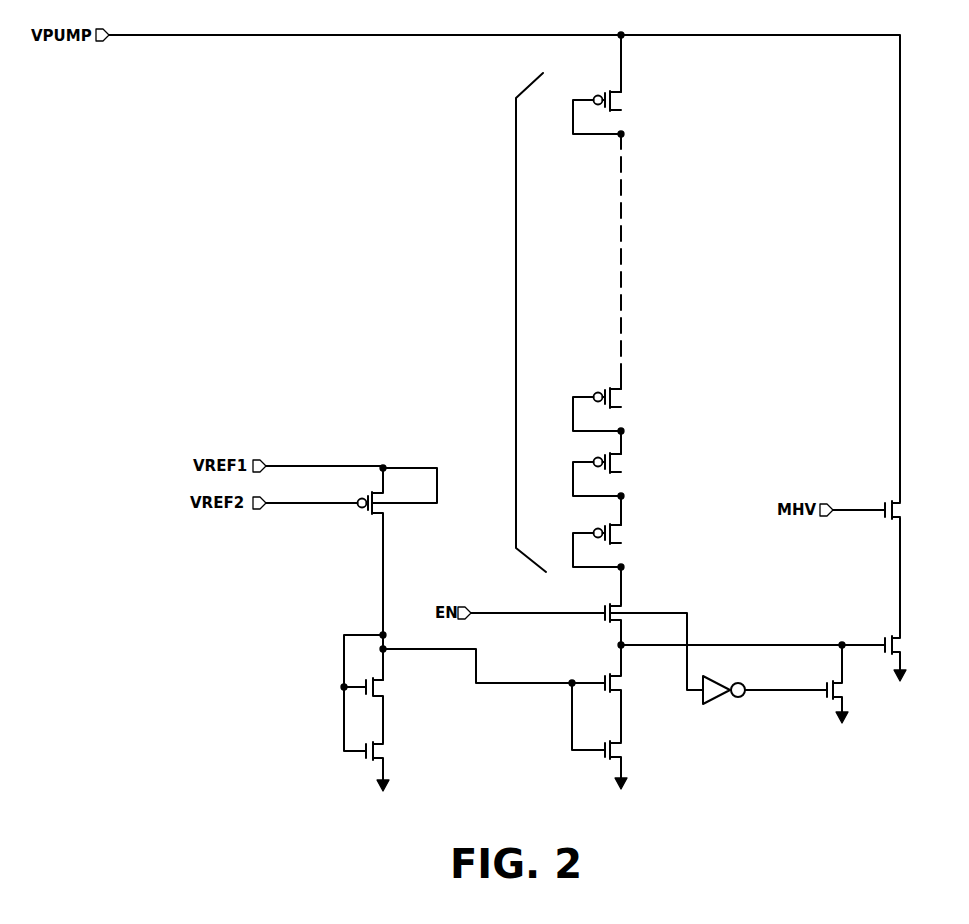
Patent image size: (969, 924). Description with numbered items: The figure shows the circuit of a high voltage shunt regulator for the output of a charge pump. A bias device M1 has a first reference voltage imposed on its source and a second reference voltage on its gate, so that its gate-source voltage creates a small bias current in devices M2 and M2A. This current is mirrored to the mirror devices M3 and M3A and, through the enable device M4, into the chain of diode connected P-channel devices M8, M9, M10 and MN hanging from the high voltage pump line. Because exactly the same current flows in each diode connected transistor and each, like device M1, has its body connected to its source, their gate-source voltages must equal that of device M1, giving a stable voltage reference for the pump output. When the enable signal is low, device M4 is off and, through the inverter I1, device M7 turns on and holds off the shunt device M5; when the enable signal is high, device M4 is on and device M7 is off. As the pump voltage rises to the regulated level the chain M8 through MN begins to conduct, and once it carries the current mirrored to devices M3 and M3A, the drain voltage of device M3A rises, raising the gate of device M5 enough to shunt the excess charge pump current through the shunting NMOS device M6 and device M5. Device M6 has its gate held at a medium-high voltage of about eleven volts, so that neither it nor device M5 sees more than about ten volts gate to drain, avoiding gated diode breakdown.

The diode connected P-channel device MN is at (598, 102).
The diode connected P-channel device M10 is at (588, 401).
The diode connected P-channel device M9 is at (593, 467).
The diode connected P-channel device M8 is at (593, 537).
The enable device M4 is at (597, 613).
The current mirror device M3A is at (595, 693).
The current mirror device M3 is at (604, 739).
The bias device M1 is at (394, 550).
The bias current device M2A is at (364, 689).
The bias current device M2 is at (371, 742).
The inverter I1 is at (763, 680).
The disable device M7 is at (836, 687).
The shunt device M5 is at (894, 602).
The shunting NMOS device M6 is at (889, 499).